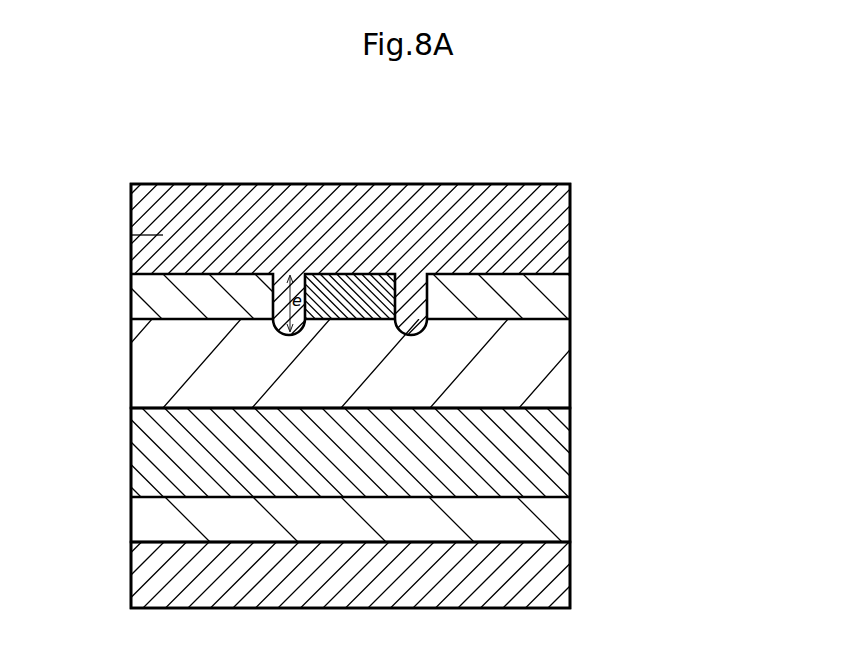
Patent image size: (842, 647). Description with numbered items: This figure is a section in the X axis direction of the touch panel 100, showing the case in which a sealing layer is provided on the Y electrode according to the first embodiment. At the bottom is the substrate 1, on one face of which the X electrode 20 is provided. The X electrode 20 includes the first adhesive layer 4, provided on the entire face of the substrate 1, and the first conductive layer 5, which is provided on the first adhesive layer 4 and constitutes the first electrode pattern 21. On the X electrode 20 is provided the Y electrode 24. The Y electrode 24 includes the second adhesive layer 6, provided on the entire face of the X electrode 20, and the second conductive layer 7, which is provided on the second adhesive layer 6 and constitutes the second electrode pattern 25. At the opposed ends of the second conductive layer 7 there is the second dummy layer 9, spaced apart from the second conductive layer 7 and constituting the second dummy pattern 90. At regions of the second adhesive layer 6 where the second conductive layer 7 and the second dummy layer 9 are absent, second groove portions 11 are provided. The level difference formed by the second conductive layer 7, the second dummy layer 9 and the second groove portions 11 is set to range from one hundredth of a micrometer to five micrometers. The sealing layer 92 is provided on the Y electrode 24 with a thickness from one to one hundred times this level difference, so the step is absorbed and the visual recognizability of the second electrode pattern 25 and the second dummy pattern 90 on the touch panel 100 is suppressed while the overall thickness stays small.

The touch panel 100 is at (351, 163).
The sealing layer 92 is at (131, 235).
The second dummy layer 9 is at (371, 266).
The second dummy pattern 90 is at (202, 297).
The second groove portions 11 is at (291, 279).
The second conductive layer 7 is at (464, 290).
The second electrode pattern 25 is at (348, 292).
The second adhesive layer 6 is at (507, 385).
The first conductive layer 5 is at (364, 452).
The first electrode pattern 21 is at (552, 458).
The first adhesive layer 4 is at (552, 519).
The substrate 1 is at (147, 573).
The Y electrode 24 is at (705, 203).
The X electrode 20 is at (707, 433).